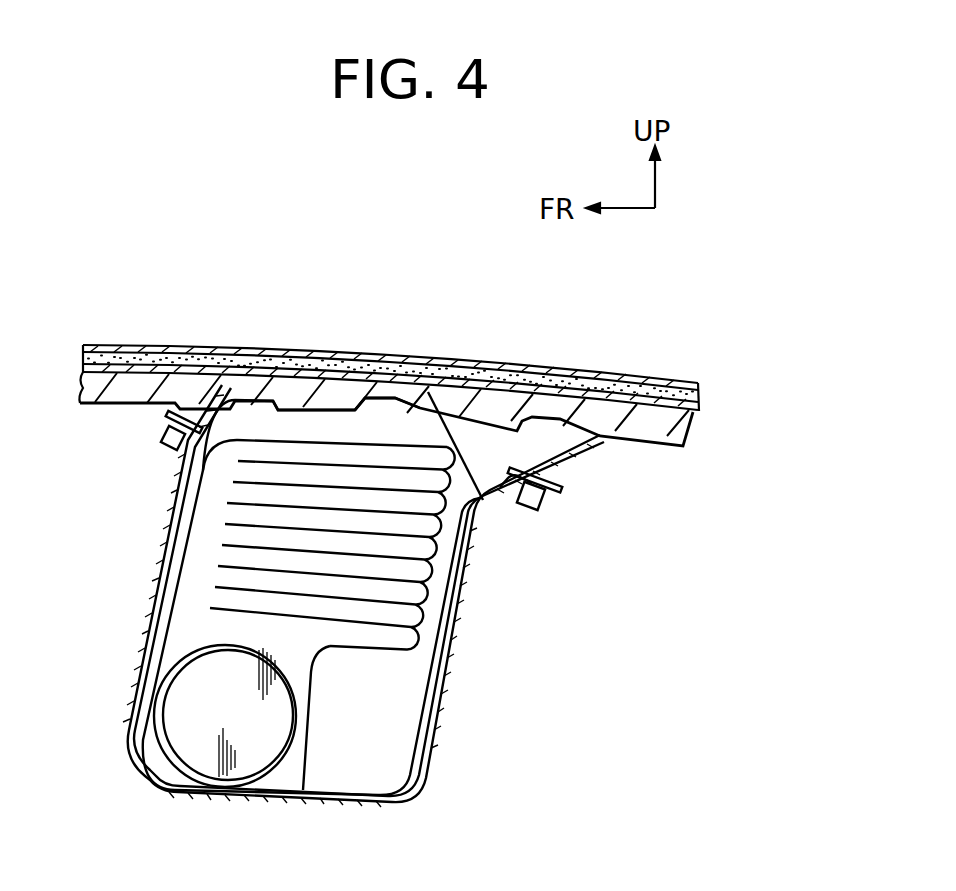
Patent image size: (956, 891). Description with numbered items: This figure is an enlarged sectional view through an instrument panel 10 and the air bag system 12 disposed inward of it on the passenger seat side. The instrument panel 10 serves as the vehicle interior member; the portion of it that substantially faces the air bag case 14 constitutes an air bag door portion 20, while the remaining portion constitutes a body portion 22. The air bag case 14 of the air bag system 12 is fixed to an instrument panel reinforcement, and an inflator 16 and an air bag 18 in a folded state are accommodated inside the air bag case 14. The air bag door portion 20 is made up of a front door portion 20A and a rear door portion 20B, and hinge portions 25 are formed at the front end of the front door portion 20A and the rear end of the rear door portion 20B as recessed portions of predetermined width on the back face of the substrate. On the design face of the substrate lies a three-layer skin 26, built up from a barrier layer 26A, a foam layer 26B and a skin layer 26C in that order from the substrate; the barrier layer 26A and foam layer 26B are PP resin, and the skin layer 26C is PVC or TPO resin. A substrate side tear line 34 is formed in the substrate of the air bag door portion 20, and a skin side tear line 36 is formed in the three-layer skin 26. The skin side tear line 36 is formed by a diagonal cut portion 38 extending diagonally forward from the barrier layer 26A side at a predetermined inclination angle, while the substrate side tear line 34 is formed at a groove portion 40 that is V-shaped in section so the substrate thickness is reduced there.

The instrument panel 10 is at (337, 264).
The body portion 22 is at (222, 345).
The air bag door portion 20 is at (393, 313).
The front door portion 20A is at (247, 352).
The rear door portion 20B is at (413, 355).
The three-layer skin 26 is at (792, 348).
The barrier layer 26A is at (693, 430).
The foam layer 26B is at (700, 400).
The skin layer 26C is at (700, 386).
The air bag system 12 is at (462, 648).
The air bag case 14 is at (466, 597).
The inflator 16 is at (273, 723).
The air bag 18 is at (318, 673).
The hinge portions 25 is at (197, 463).
The substrate side tear line 34 is at (480, 497).
The skin side tear line 36 is at (459, 423).
The diagonal cut portion 38 is at (320, 416).
The groove portion 40 is at (401, 404).